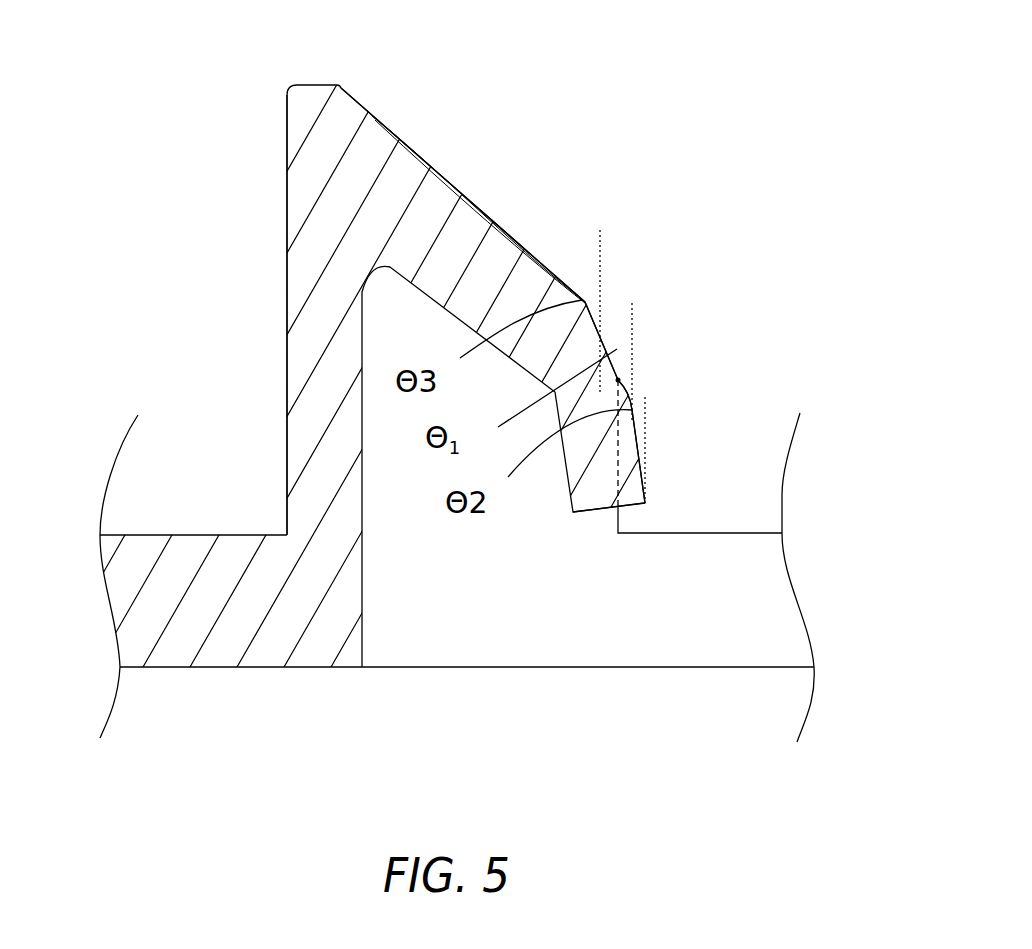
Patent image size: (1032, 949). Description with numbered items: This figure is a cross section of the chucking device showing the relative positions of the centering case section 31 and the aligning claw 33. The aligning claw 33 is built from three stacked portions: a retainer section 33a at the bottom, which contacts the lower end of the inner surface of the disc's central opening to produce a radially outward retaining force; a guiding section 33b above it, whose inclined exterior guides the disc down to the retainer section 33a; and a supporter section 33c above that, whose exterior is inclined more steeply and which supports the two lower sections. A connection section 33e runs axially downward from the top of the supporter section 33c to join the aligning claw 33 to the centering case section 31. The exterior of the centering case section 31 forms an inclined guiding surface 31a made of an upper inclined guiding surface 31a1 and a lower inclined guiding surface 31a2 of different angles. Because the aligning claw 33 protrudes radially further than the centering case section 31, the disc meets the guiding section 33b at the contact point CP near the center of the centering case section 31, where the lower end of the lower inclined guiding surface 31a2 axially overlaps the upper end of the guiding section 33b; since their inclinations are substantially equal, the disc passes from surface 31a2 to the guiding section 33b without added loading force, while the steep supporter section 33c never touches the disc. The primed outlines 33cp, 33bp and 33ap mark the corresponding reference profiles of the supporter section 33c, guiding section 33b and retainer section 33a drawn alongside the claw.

The aligning claw 33 is at (270, 295).
The connection section 33e is at (307, 415).
The supporter section 33c is at (425, 217).
The original chamfered face (33c') 33cp is at (404, 144).
The centering case section 31 is at (541, 252).
The inclined guiding surface 31a is at (569, 287).
The upper inclined guiding surface 31a1 is at (505, 228).
The lower inclined guiding surface 31a2 is at (591, 319).
The contact point CP is at (618, 380).
The guiding section 33b is at (630, 400).
The original tip face (33b') 33bp is at (620, 392).
The retainer section 33a is at (637, 483).
The original bottom face (33a') 33ap is at (645, 490).